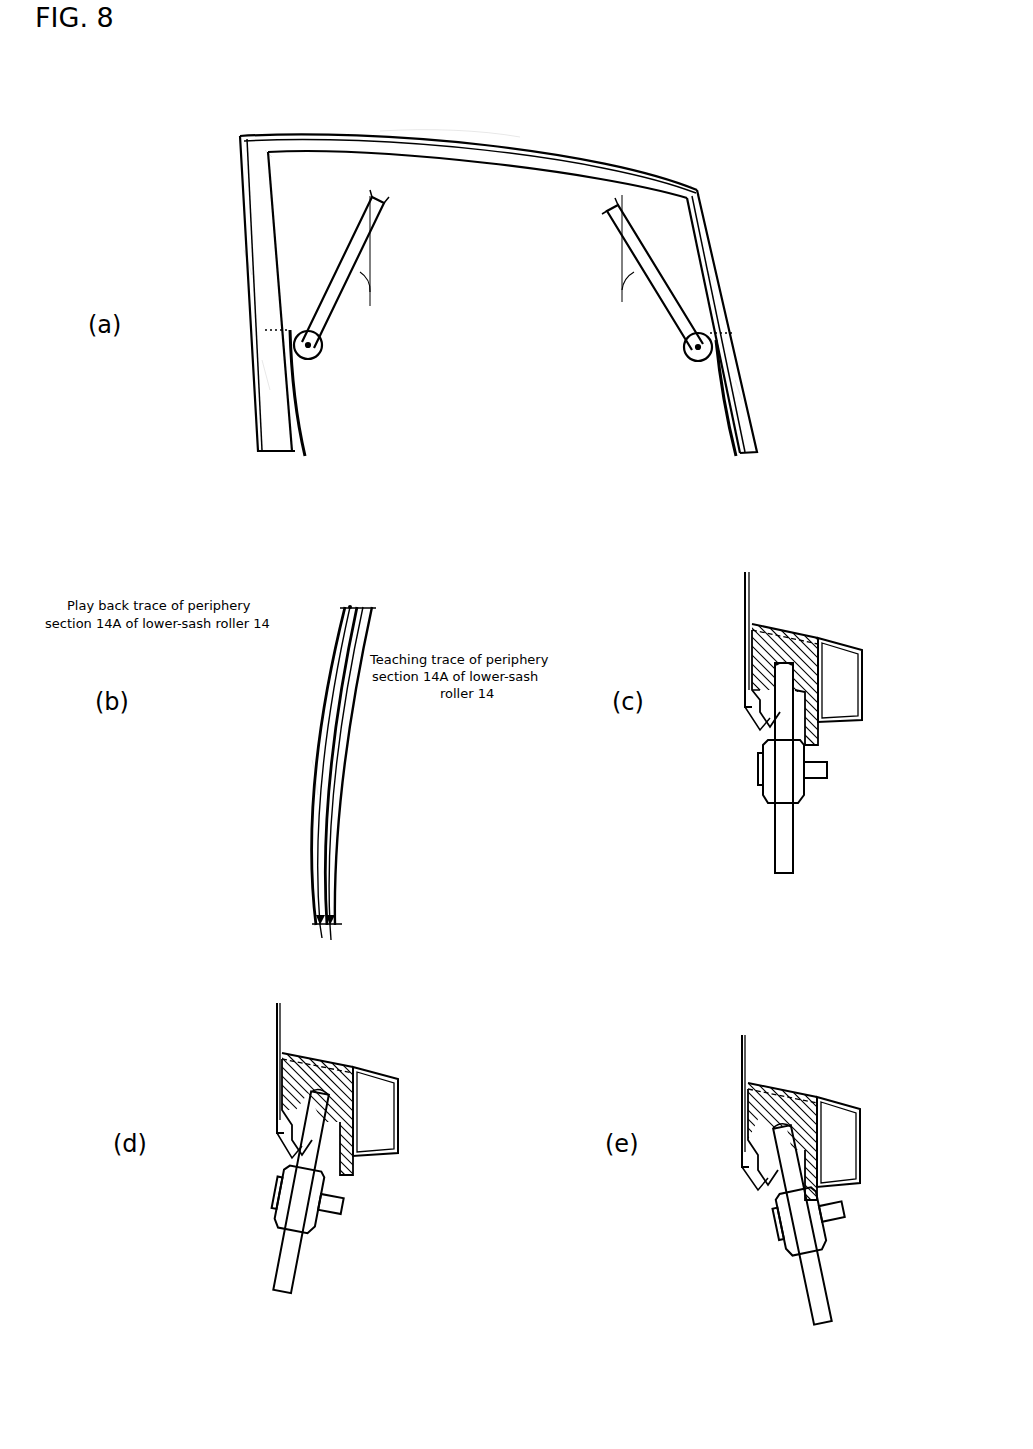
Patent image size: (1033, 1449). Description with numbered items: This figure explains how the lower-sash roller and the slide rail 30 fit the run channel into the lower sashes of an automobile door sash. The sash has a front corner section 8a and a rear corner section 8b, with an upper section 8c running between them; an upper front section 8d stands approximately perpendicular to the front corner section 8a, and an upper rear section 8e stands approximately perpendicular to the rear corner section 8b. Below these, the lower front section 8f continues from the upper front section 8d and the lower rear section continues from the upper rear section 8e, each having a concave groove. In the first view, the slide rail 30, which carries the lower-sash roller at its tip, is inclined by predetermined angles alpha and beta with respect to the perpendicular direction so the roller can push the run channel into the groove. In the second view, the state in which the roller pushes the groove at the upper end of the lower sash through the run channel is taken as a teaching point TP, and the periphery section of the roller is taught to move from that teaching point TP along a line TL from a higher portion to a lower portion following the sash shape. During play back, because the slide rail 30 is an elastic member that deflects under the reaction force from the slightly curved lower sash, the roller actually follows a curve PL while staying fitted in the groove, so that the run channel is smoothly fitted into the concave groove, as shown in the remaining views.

The front corner section 8a is at (698, 190).
The rear corner section 8b is at (268, 152).
The upper section 8c is at (424, 140).
The upper front section 8d is at (716, 273).
The upper rear section 8e is at (258, 262).
The lower front section 8f is at (743, 391).
The slide rail 30 is at (382, 236).
The teaching point TP is at (354, 602).
The play back curve PL is at (329, 668).
The teaching line TL is at (350, 726).